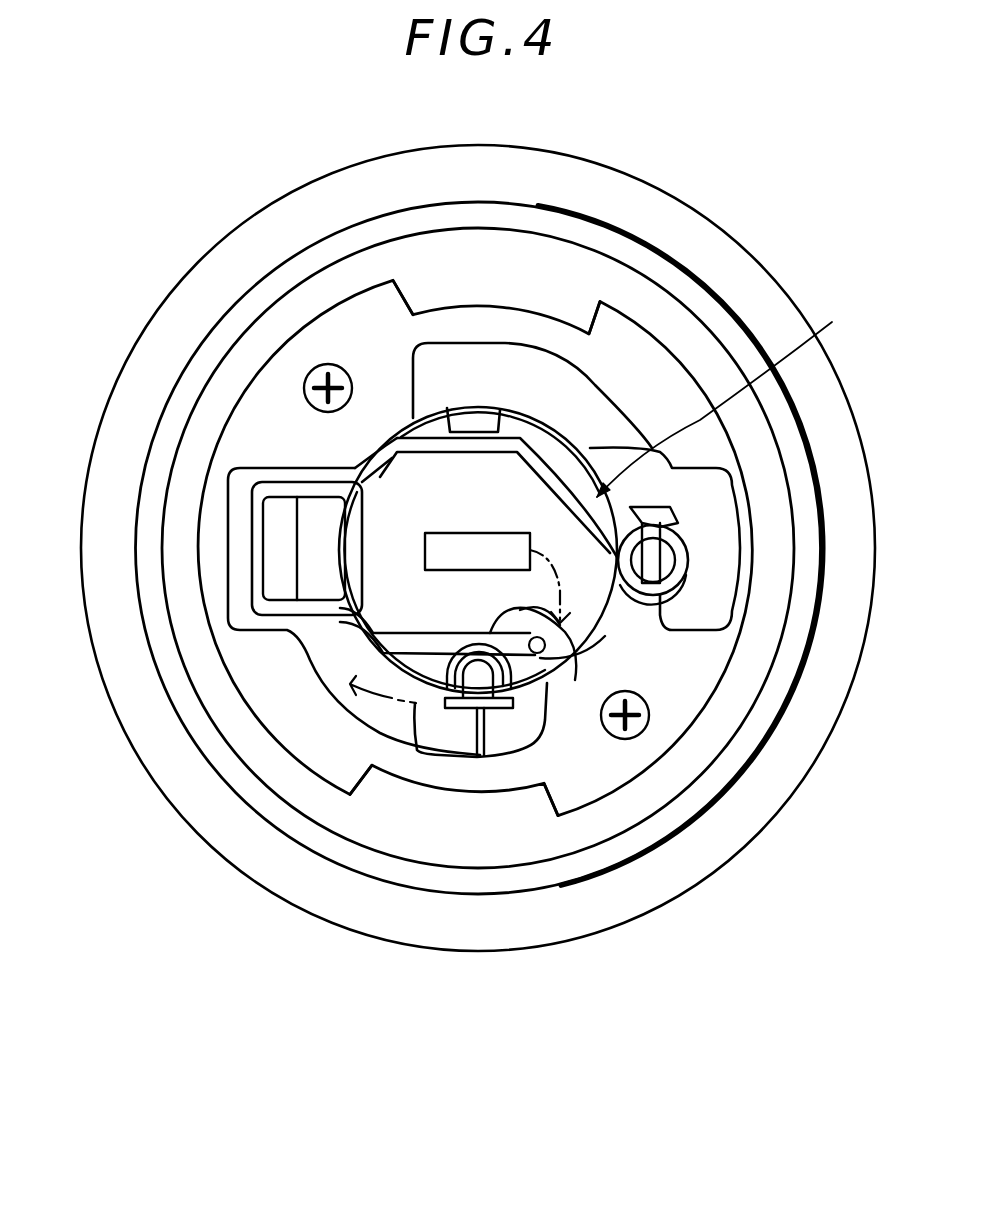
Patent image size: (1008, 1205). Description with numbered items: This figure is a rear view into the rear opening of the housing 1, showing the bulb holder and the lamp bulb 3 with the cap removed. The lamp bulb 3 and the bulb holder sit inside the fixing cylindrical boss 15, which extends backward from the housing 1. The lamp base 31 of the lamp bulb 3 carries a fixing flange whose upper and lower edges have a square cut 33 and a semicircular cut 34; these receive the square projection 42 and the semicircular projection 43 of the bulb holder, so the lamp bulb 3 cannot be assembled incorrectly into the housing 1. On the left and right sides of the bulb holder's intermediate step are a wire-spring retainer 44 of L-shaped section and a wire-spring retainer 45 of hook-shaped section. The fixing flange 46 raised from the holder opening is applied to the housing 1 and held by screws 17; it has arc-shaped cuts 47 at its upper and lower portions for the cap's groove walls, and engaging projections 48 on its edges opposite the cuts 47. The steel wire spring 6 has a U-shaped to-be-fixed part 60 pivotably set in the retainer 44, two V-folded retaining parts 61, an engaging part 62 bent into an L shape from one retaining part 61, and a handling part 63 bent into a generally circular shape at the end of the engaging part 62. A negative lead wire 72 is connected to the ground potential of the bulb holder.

The housing 1 is at (478, 548).
The lamp bulb 3 is at (680, 546).
The wire spring 6 is at (724, 395).
The fixing cylindrical boss 15 is at (478, 548).
The screw 17 is at (482, 551).
The lamp base 31 is at (388, 476).
The square cut 33 is at (484, 325).
The semicircular cut 34 is at (563, 805).
The square projection 42 is at (467, 258).
The semicircular projection 43 is at (480, 856).
The wire-spring retainer 44 is at (271, 603).
The wire-spring retainer 45 is at (745, 502).
The fixing flange 46 is at (428, 548).
The arc-shaped cut 47 is at (479, 549).
The engaging projection 48 is at (479, 561).
The to-be-fixed part 60 is at (423, 680).
The retaining part 61 is at (481, 556).
The engaging part 62 is at (767, 522).
The handling part 63 is at (750, 687).
The negative lead wire 72 is at (453, 839).